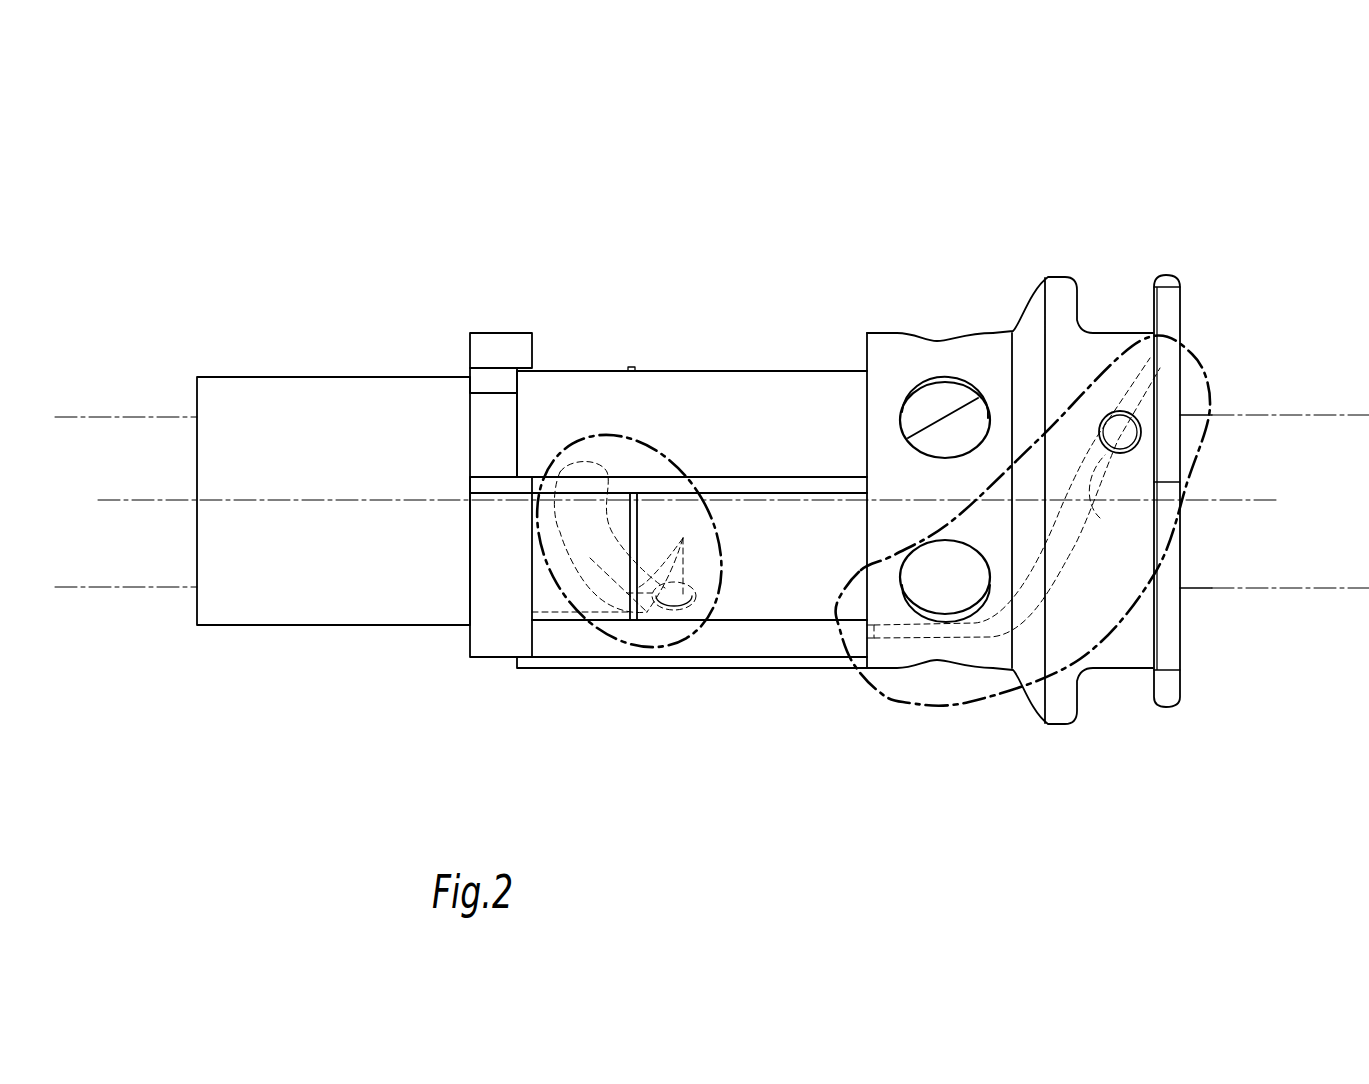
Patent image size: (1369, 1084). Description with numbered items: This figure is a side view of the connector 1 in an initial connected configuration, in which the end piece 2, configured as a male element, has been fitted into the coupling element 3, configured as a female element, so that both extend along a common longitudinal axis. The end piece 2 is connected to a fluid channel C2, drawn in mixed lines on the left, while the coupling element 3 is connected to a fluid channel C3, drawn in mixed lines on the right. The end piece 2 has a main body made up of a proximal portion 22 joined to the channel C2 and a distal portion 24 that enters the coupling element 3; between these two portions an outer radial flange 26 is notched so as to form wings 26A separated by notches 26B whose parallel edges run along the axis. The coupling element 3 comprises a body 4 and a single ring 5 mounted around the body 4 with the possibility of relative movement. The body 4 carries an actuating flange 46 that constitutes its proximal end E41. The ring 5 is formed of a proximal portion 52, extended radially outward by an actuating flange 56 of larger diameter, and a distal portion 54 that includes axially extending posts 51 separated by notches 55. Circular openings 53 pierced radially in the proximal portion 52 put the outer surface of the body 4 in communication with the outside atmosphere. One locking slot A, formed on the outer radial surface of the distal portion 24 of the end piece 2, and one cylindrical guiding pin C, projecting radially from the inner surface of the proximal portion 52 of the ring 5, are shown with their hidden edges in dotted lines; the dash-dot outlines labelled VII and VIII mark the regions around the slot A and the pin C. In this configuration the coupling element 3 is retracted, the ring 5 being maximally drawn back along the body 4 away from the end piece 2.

The connector 1 is at (545, 211).
The end piece 2 is at (318, 348).
The coupling element 3 is at (838, 230).
The body 4 is at (1181, 305).
The ring 5 is at (993, 333).
The proximal portion 22 is at (188, 656).
The distal portion 24 is at (614, 541).
The outer radial flange 26 is at (500, 333).
The wings 26A is at (492, 574).
The notches 26B is at (488, 436).
The actuating flange 46 is at (1163, 277).
The posts 51 is at (780, 460).
The proximal portion 52 is at (1128, 755).
The circular openings 53 is at (951, 446).
The distal portion 54 is at (863, 741).
The notches 55 is at (832, 522).
The actuating flange 56 is at (1057, 292).
The locking slot A is at (588, 551).
The guiding pin C is at (1100, 518).
The fluid channel C2 is at (100, 417).
The fluid channel C3 is at (1328, 415).
The proximal end E41 is at (1180, 574).
The section VII detail VII is at (663, 455).
The section VIII detail VIII is at (1207, 363).